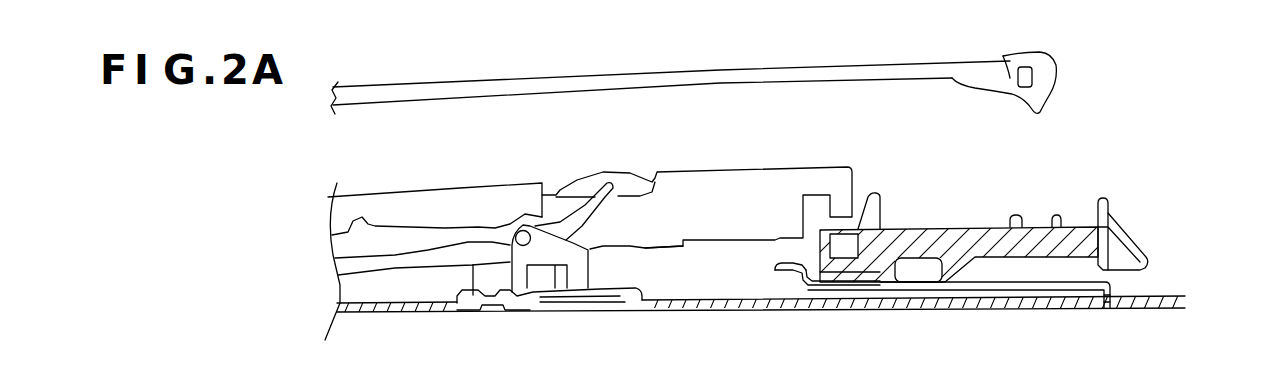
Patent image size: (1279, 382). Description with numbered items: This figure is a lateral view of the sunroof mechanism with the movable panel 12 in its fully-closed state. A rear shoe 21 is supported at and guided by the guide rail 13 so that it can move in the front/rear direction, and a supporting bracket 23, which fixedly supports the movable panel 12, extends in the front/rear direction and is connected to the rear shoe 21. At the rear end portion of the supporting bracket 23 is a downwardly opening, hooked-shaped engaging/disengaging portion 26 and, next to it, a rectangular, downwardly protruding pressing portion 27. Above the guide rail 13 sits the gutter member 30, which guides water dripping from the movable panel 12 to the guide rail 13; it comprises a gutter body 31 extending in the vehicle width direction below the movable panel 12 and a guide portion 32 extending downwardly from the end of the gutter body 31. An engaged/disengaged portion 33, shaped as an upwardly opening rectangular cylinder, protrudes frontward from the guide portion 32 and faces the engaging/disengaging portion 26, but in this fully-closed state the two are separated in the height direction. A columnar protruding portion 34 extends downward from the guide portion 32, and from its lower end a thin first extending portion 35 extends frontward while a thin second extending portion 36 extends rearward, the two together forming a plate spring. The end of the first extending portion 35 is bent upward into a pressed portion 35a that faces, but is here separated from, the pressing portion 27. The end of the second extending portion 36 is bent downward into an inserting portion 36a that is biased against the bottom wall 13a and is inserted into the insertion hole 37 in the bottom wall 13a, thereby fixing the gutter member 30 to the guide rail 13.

The movable panel 12 is at (818, 62).
The guide rail 13 is at (800, 327).
The bottom wall 13a is at (1180, 308).
The rear shoe 21 is at (523, 303).
The supporting bracket 23 is at (733, 170).
The engaging/disengaging portion 26 is at (853, 182).
The pressing portion 27 is at (790, 242).
The gutter member 30 is at (1133, 232).
The gutter body 31 is at (1035, 225).
The guide portion 32 is at (898, 283).
The engaged/disengaged portion 33 is at (818, 243).
The protruding portion 34 is at (983, 284).
The first extending portion 35 is at (842, 282).
The pressed portion 35a is at (790, 272).
The second extending portion 36 is at (1018, 291).
The inserting portion 36a is at (1109, 308).
The insertion hole 37 is at (1105, 307).